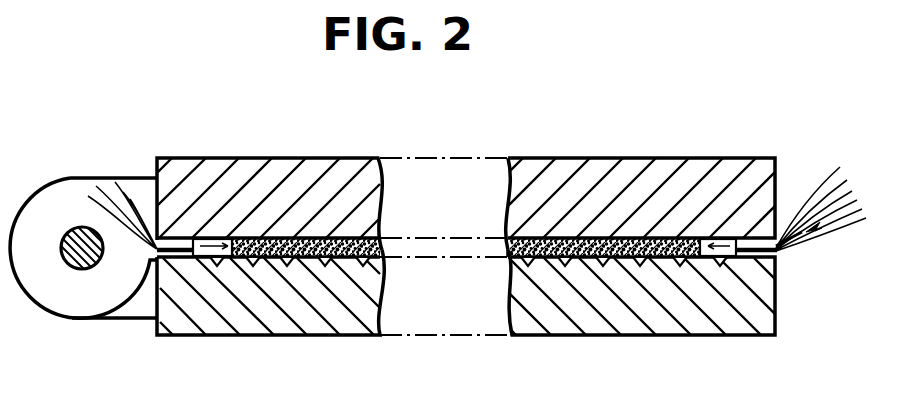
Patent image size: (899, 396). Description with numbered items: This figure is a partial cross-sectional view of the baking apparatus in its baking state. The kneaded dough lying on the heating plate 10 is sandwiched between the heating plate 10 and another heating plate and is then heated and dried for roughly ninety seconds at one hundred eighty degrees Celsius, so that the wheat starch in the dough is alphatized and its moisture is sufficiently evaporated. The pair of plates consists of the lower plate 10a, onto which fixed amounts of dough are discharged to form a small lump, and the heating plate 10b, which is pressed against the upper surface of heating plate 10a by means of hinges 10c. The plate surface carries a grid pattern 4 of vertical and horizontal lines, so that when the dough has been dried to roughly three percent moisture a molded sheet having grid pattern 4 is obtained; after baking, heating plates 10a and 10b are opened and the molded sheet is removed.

The heating plate 10 is at (477, 231).
The lower plate 10a is at (333, 323).
The heating plate 10b is at (295, 172).
The hinges 10c is at (68, 192).
The grid pattern 4 is at (283, 262).